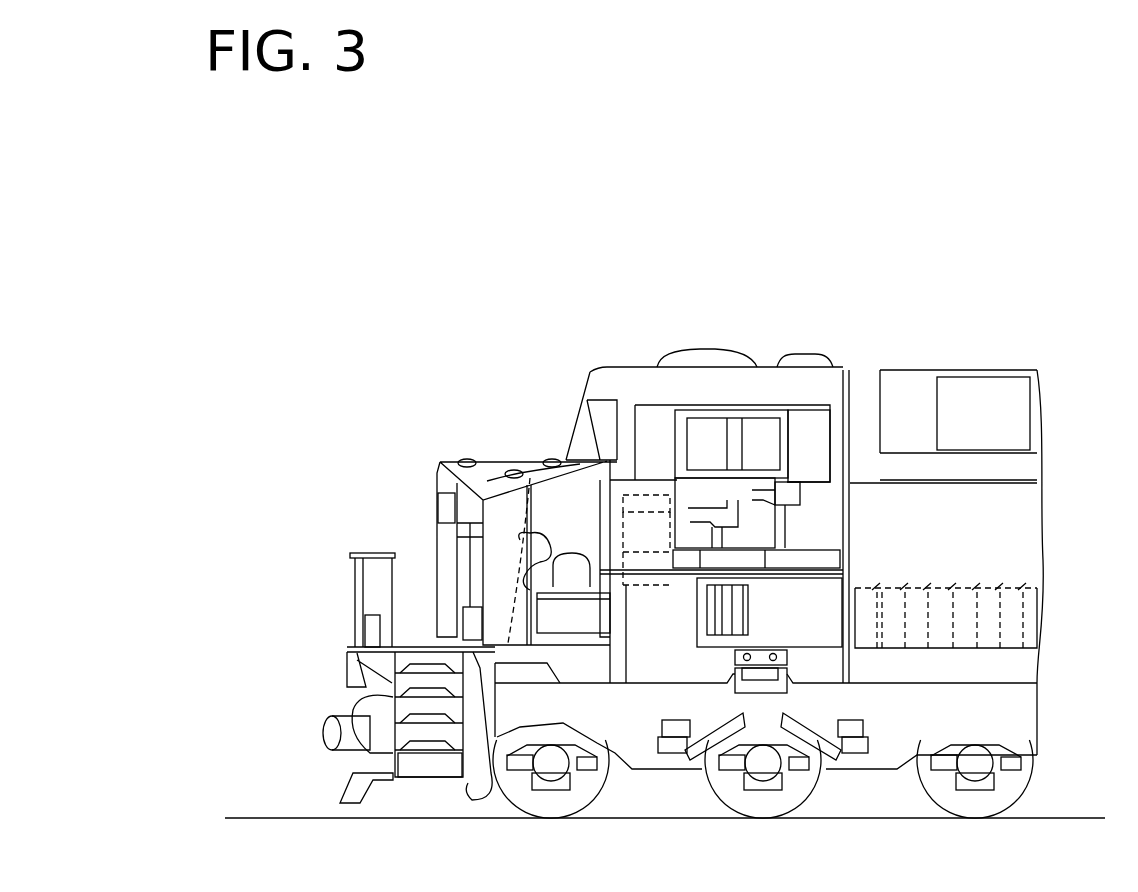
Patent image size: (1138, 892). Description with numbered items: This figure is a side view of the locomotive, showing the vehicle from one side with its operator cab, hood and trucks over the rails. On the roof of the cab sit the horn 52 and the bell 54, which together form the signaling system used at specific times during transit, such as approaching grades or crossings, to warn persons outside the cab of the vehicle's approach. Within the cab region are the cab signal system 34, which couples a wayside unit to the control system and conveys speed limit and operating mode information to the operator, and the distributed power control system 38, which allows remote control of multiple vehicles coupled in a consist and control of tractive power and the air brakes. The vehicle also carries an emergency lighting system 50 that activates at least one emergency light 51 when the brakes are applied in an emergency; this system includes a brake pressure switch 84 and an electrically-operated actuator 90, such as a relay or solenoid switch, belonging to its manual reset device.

The emergency lighting system 50 is at (825, 400).
The horn 52 is at (704, 346).
The bell 54 is at (829, 360).
The cab signal system 34 is at (630, 493).
The distributed power control system 38 is at (648, 548).
The electrically-operated actuator 90 is at (680, 560).
The emergency light 51 is at (748, 610).
The brake pressure switch 84 is at (818, 716).